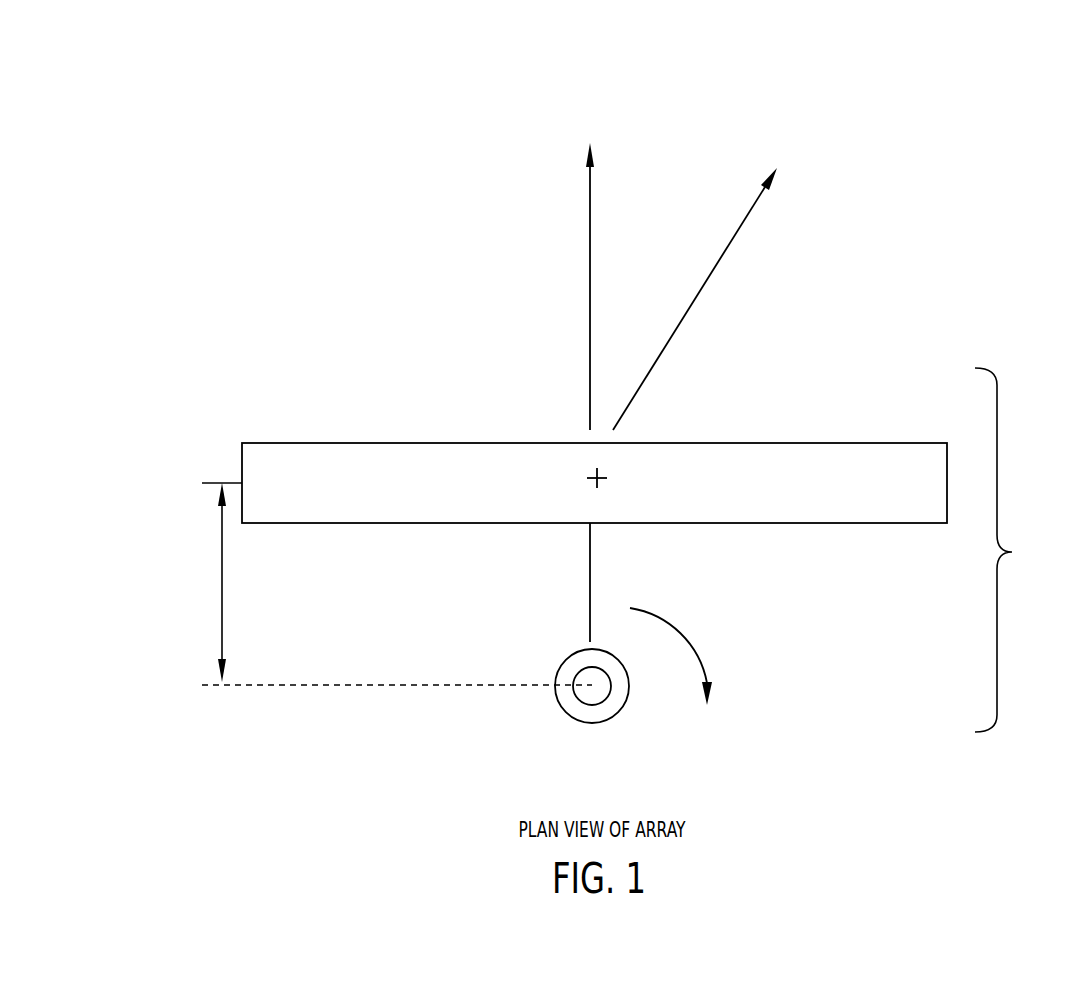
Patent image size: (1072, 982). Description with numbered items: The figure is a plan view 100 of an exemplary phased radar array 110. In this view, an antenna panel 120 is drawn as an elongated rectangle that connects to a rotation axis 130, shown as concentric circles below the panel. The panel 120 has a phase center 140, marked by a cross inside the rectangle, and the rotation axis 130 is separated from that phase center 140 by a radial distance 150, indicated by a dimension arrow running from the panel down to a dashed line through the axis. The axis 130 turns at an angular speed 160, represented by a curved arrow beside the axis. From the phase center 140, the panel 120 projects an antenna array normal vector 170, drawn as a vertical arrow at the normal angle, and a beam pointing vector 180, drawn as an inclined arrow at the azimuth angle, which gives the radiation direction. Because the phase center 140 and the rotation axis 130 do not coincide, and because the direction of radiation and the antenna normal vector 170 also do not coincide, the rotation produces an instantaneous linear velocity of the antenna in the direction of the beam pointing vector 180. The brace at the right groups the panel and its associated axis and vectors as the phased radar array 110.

The plan view 100 is at (947, 130).
The phased radar array 110 is at (1012, 552).
The antenna panel 120 is at (902, 493).
The rotation axis 130 is at (622, 708).
The phase center 140 is at (573, 511).
The radial distance r 150 is at (222, 632).
The angular speed ω 160 is at (692, 642).
The antenna array normal vector 170 is at (590, 273).
The beam pointing vector 180 is at (710, 278).